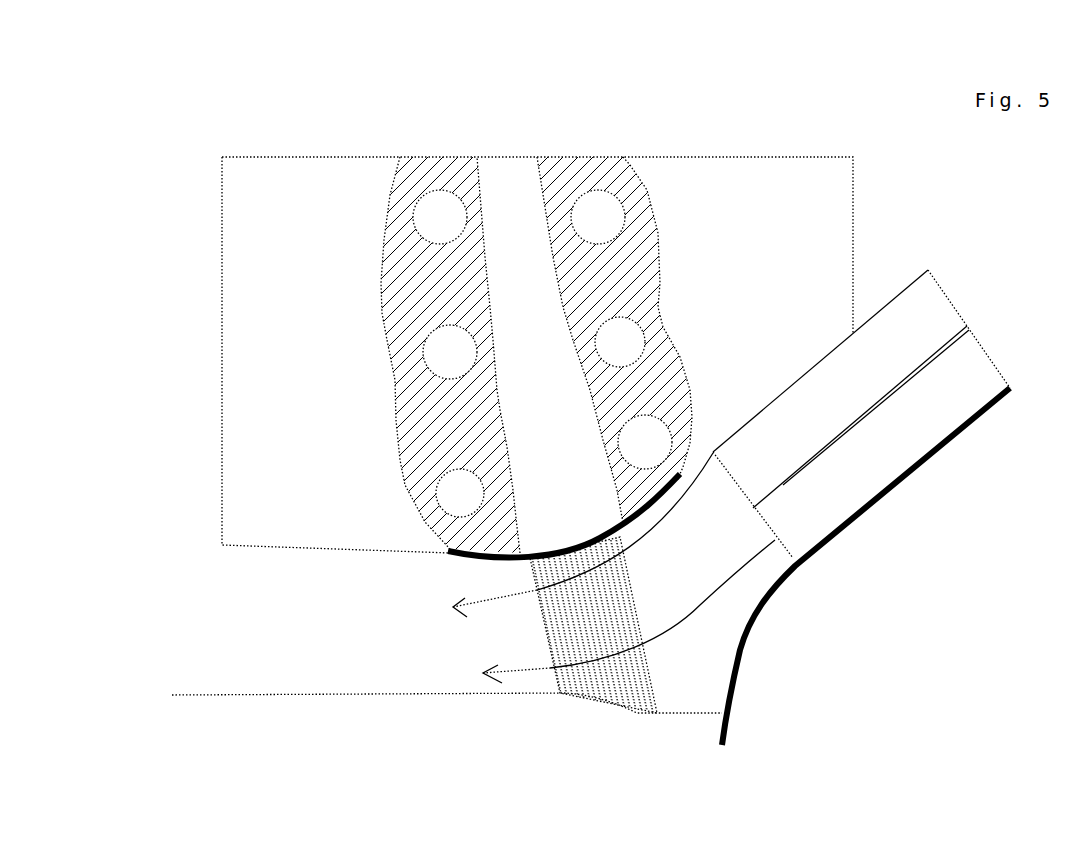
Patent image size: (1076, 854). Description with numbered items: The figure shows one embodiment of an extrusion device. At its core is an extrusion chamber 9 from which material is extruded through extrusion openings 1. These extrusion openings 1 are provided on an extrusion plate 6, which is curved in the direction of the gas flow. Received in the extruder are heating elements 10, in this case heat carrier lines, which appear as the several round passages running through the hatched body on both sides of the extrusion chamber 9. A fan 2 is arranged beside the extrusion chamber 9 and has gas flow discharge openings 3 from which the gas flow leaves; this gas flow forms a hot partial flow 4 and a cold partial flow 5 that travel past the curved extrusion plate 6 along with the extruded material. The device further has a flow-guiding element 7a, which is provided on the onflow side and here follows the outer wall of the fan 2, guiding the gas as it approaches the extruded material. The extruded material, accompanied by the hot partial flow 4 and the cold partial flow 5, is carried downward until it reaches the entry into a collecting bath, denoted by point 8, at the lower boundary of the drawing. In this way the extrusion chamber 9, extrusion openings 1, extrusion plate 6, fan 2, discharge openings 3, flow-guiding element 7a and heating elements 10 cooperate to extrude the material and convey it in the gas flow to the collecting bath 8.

The extrusion openings 1 is at (555, 540).
The fan 2 is at (983, 347).
The gas flow discharge openings 3 is at (735, 473).
The hot partial flow 4 is at (449, 630).
The cold partial flow 5 is at (516, 690).
The extrusion plate 6 is at (452, 565).
The flow-guiding element 7a is at (752, 673).
The entry into a collecting bath 8 is at (626, 725).
The extrusion chamber 9 is at (538, 355).
The heating elements 10 is at (643, 443).